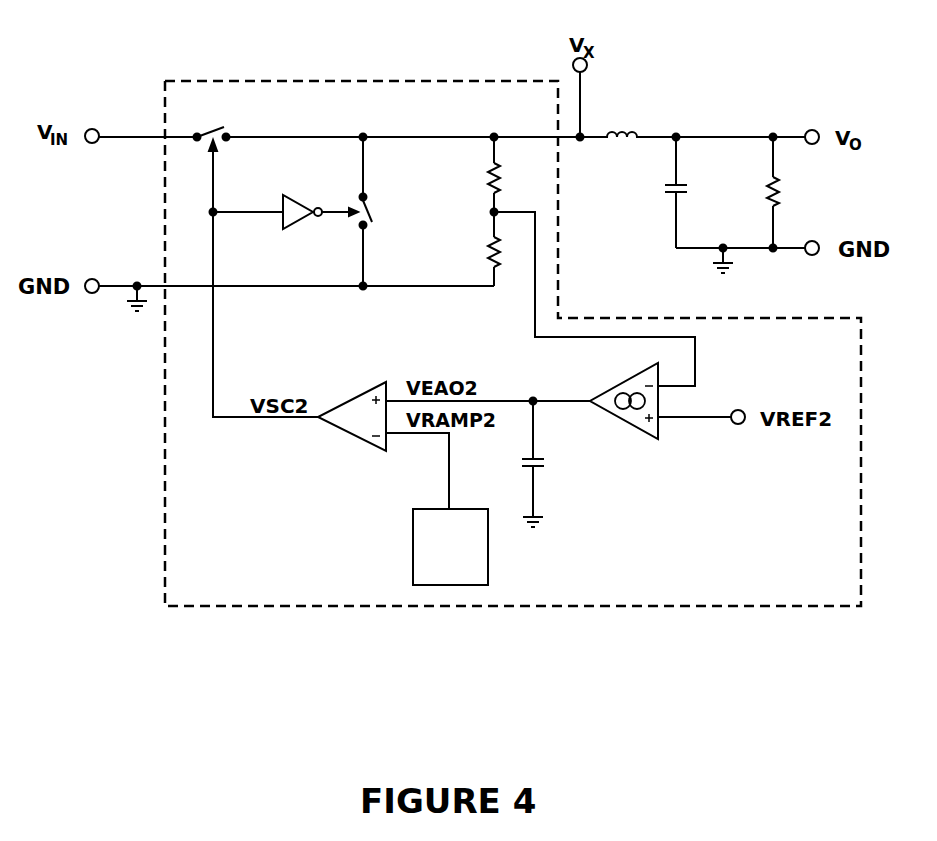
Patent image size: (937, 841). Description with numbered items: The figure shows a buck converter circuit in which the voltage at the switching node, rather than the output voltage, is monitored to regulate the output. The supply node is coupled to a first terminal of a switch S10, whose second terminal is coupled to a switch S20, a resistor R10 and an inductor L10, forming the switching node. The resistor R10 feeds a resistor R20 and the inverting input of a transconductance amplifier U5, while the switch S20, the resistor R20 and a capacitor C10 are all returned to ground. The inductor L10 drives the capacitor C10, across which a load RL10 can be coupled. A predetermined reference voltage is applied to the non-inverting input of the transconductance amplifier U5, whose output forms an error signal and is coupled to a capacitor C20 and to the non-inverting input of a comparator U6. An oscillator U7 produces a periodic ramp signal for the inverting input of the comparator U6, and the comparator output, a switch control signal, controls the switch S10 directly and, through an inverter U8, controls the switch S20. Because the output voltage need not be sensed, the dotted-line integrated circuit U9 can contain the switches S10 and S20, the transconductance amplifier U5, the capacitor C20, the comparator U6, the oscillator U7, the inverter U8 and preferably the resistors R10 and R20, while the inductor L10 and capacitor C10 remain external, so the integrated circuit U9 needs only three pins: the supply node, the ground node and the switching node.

The integrated circuit U9 is at (393, 78).
The switch S10 is at (214, 119).
The inverter U8 is at (320, 205).
The switch S20 is at (389, 212).
The resistor R10 is at (470, 175).
The resistor R20 is at (468, 249).
The inductor L10 is at (610, 117).
The capacitor C10 is at (704, 192).
The load RL10 is at (810, 192).
The transconductance amplifier U5 is at (624, 394).
The comparator U6 is at (383, 434).
The oscillator U7 is at (430, 547).
The capacitor C20 is at (560, 464).